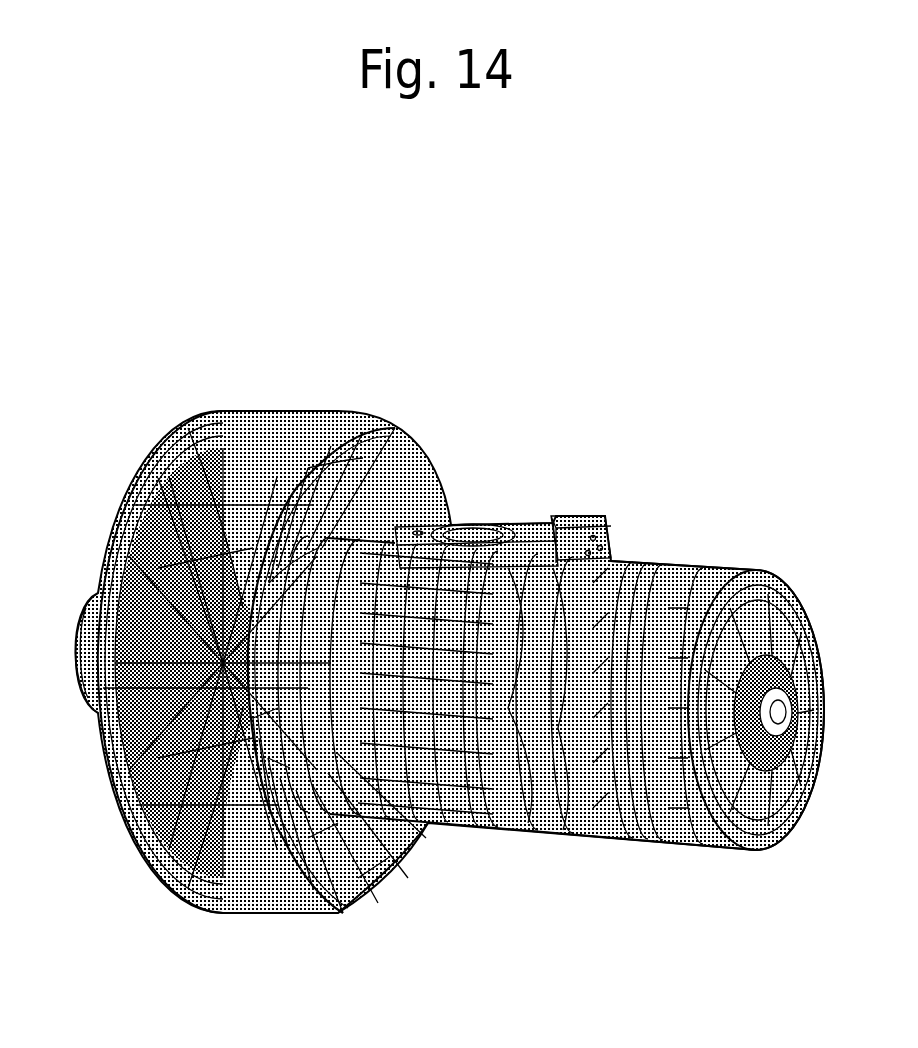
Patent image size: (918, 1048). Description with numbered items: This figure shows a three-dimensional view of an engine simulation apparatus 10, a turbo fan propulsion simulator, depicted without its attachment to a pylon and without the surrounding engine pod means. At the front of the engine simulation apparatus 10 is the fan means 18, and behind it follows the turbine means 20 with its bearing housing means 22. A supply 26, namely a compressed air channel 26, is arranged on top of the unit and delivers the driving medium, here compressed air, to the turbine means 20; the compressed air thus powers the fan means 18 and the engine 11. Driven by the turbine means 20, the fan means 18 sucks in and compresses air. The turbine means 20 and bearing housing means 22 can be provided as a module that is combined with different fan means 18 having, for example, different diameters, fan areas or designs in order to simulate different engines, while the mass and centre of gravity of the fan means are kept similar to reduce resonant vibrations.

The engine simulation apparatus 10 is at (321, 374).
The engine 11 is at (152, 373).
The fan means 18 is at (208, 410).
The turbine means 20 is at (517, 580).
The bearing housing means 22 is at (620, 555).
The compressed air channel 26 is at (461, 523).